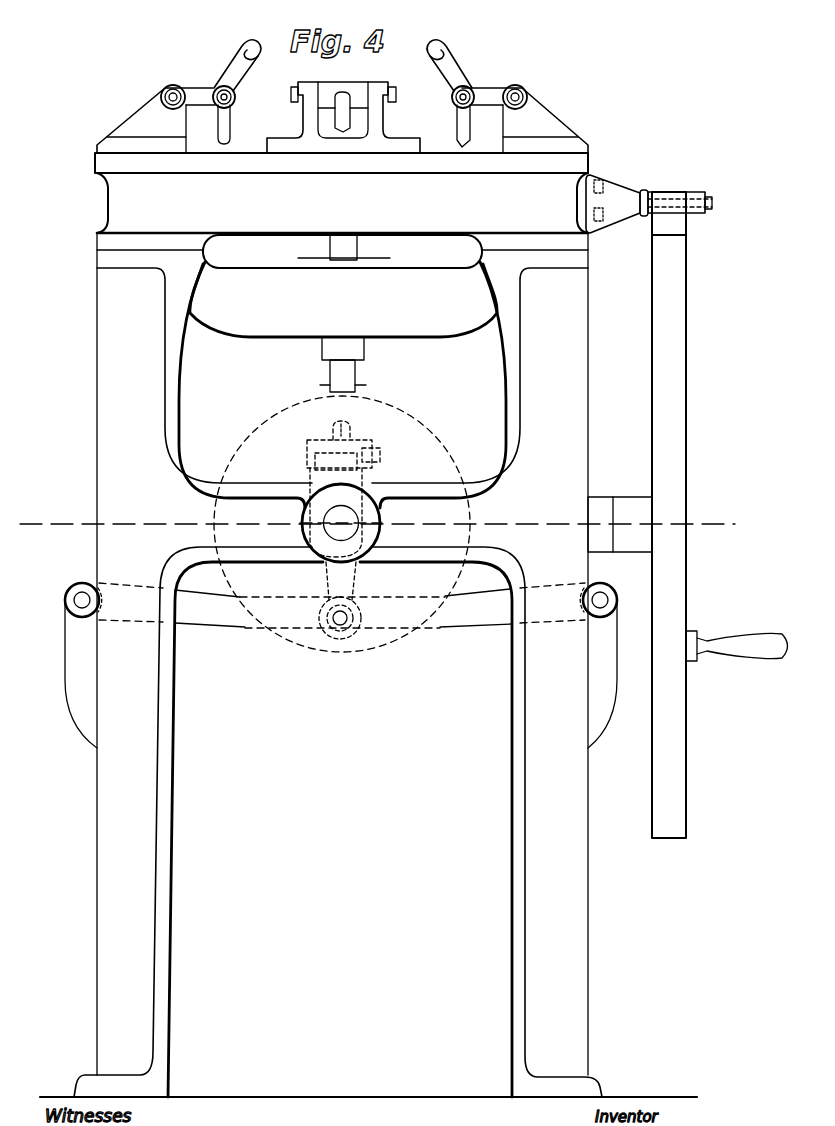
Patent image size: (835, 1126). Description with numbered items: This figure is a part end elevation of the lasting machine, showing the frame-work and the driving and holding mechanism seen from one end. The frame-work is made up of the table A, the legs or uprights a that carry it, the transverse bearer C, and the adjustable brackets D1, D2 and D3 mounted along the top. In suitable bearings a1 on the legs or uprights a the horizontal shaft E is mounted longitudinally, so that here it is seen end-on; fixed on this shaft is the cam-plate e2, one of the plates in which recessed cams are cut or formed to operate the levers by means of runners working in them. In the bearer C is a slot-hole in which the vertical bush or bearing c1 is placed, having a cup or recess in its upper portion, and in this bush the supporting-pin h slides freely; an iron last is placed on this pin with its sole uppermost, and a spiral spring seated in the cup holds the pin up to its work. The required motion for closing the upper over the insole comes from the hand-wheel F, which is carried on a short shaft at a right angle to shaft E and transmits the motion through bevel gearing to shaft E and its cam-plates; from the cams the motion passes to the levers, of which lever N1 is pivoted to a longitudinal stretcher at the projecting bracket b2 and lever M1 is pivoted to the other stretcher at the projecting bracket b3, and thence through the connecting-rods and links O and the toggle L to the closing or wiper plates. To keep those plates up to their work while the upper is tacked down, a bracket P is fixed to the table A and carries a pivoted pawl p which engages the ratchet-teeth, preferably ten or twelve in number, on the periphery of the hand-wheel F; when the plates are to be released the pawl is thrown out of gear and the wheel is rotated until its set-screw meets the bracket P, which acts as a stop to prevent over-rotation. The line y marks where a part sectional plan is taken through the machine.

The table A is at (342, 203).
The legs or uprights a is at (338, 665).
The bearings a1 is at (380, 522).
The projecting bracket b2 is at (66, 625).
The projecting bracket b3 is at (598, 665).
The transverse bearer C is at (343, 328).
The vertical bush or bearing c1 is at (380, 262).
The supporting-pin h is at (343, 247).
The adjustable bracket D1 is at (156, 120).
The adjustable bracket D2 is at (383, 120).
The adjustable bracket D3 is at (525, 120).
The horizontal shaft E is at (341, 523).
The cam-plate e2 is at (252, 470).
The hand-wheel F is at (720, 515).
The toggle L is at (182, 88).
The connecting-rods and links O is at (231, 128).
The lever M1 is at (512, 605).
The lever N1 is at (272, 605).
The bracket P is at (617, 204).
The pivoted pawl p is at (690, 226).
The section line y is at (384, 523).